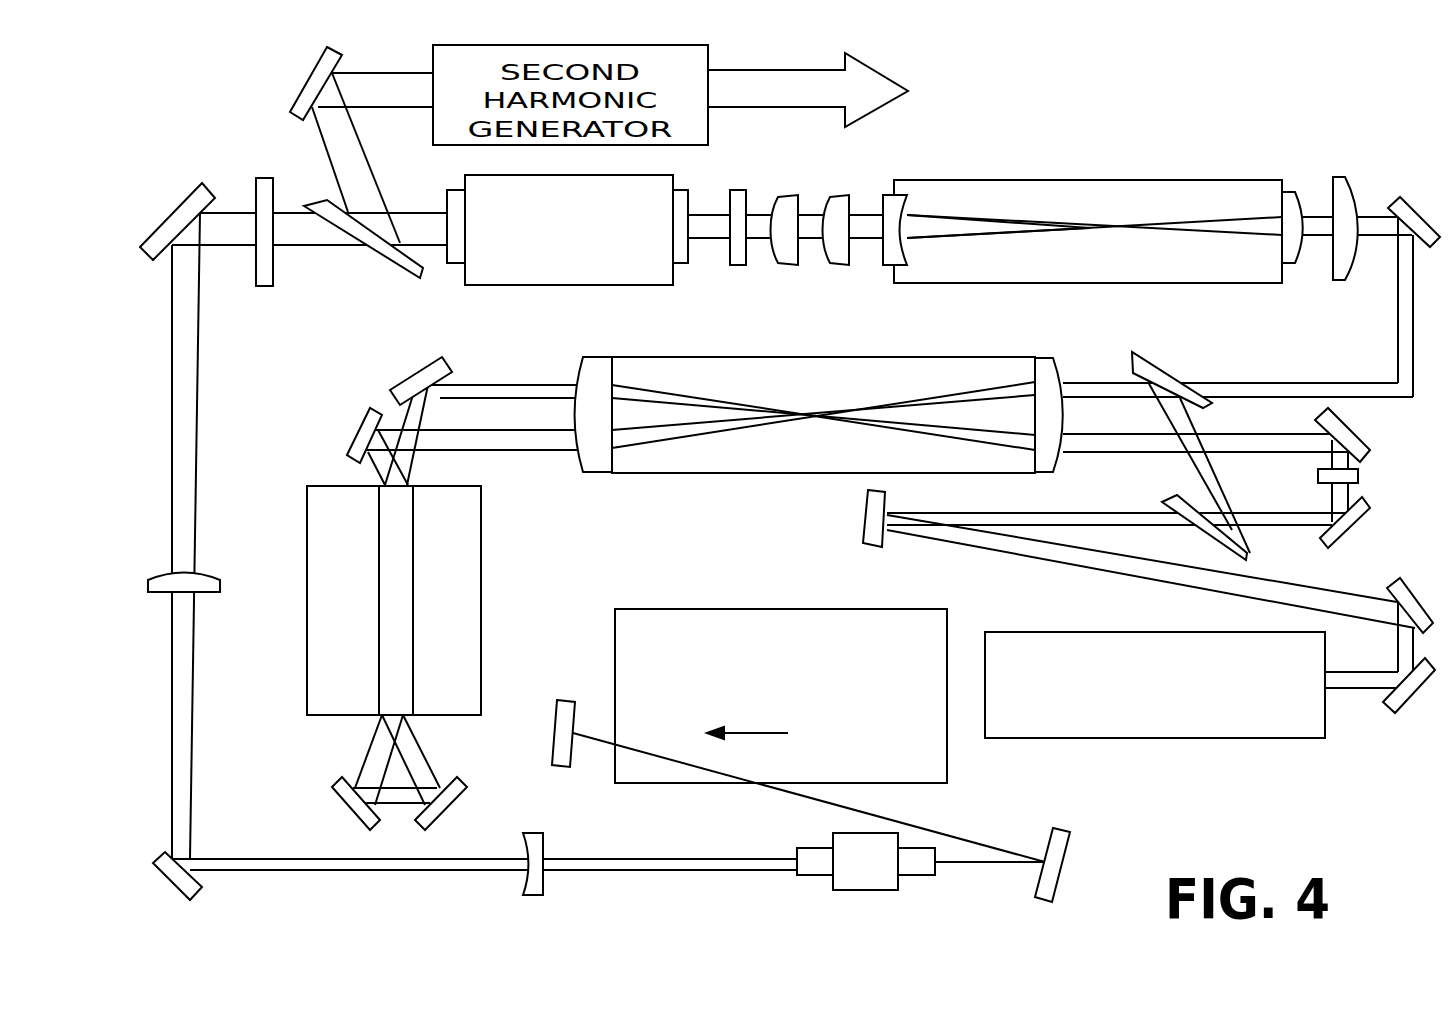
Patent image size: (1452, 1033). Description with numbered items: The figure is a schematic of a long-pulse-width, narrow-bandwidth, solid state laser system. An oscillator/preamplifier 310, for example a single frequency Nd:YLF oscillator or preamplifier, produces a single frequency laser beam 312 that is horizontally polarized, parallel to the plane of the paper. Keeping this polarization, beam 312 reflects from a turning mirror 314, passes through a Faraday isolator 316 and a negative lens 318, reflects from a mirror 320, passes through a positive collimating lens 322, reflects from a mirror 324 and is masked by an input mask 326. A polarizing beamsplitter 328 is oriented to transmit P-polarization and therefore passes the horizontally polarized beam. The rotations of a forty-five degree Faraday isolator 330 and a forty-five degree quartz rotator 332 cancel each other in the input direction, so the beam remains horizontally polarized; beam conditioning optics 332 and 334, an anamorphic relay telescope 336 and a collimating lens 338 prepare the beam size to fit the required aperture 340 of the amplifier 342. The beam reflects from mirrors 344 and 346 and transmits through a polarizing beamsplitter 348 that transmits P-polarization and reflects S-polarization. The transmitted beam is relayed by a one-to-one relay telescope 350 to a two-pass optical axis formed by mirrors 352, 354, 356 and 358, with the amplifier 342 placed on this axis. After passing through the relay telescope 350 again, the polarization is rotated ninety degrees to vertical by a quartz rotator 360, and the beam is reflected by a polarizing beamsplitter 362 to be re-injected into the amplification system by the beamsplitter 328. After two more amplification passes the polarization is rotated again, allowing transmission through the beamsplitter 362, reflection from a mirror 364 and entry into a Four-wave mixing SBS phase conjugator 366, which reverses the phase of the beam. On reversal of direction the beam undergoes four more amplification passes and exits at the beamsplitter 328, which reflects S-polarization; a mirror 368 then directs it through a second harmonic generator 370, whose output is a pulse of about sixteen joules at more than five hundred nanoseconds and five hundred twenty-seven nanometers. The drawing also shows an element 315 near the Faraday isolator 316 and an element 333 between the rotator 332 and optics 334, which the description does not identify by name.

The oscillator/preamplifier 310 is at (676, 609).
The single frequency laser beam 312 is at (402, 212).
The turning mirror 314 is at (560, 700).
The mirror 315 is at (1070, 830).
The Faraday isolator 316 is at (800, 848).
The negative lens 318 is at (545, 858).
The mirror 320 is at (197, 893).
The positive collimating lens 322 is at (210, 572).
The mirror 324 is at (180, 192).
The input mask 326 is at (265, 178).
The polarizing beamsplitter 328 is at (385, 258).
The 45° Faraday isolator 330 is at (540, 287).
The 45° quartz rotator 332 is at (728, 268).
The lens 333 is at (788, 195).
The beam conditioning optics 334 is at (842, 195).
The anamorphic relay telescope 336 is at (1047, 180).
The collimating lens 338 is at (1338, 177).
The aperture 340 is at (400, 528).
The amplifier 342 is at (308, 665).
The mirror 344 is at (1403, 198).
The mirror 346 is at (1368, 440).
The polarizing beamsplitter 348 is at (1165, 382).
The 1:1 relay telescope 350 is at (880, 358).
The mirror 352 is at (350, 430).
The mirror 354 is at (465, 812).
The mirror 356 is at (338, 812).
The mirror 358 is at (420, 360).
The quartz rotator 360 is at (1360, 477).
The polarizing beamsplitter 362 is at (1165, 500).
The mirror 364 is at (862, 515).
The Four-wave mixing SBS phase conjugator 366 is at (1046, 632).
The mirror 368 is at (296, 92).
The second harmonic generator 370 is at (712, 67).